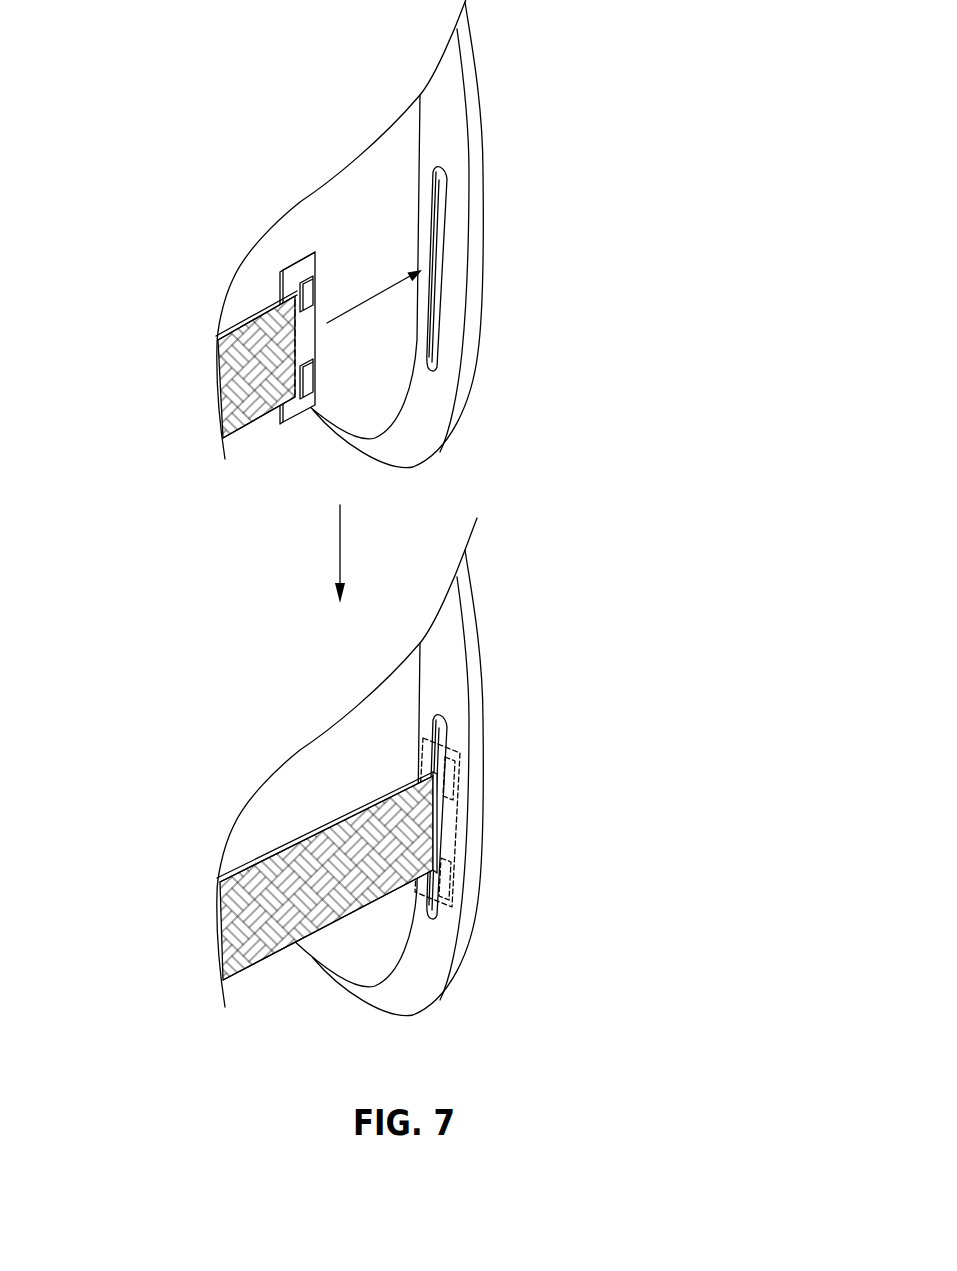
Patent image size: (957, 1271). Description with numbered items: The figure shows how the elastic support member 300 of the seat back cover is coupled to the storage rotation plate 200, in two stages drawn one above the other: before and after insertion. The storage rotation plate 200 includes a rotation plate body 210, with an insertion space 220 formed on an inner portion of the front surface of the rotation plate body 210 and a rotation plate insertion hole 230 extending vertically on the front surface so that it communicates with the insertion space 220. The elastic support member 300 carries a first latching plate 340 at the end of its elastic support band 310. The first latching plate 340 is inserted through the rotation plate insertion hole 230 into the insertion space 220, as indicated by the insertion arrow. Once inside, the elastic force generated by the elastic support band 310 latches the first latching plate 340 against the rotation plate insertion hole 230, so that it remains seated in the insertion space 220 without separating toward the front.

The storage rotation plate 200 is at (500, 132).
The rotation plate body 210 is at (473, 170).
The insertion space 220 is at (442, 232).
The rotation plate insertion hole 230 is at (438, 313).
The elastic support member 300 is at (240, 455).
The elastic support band 310 is at (258, 422).
The first latching plate 340 is at (310, 335).